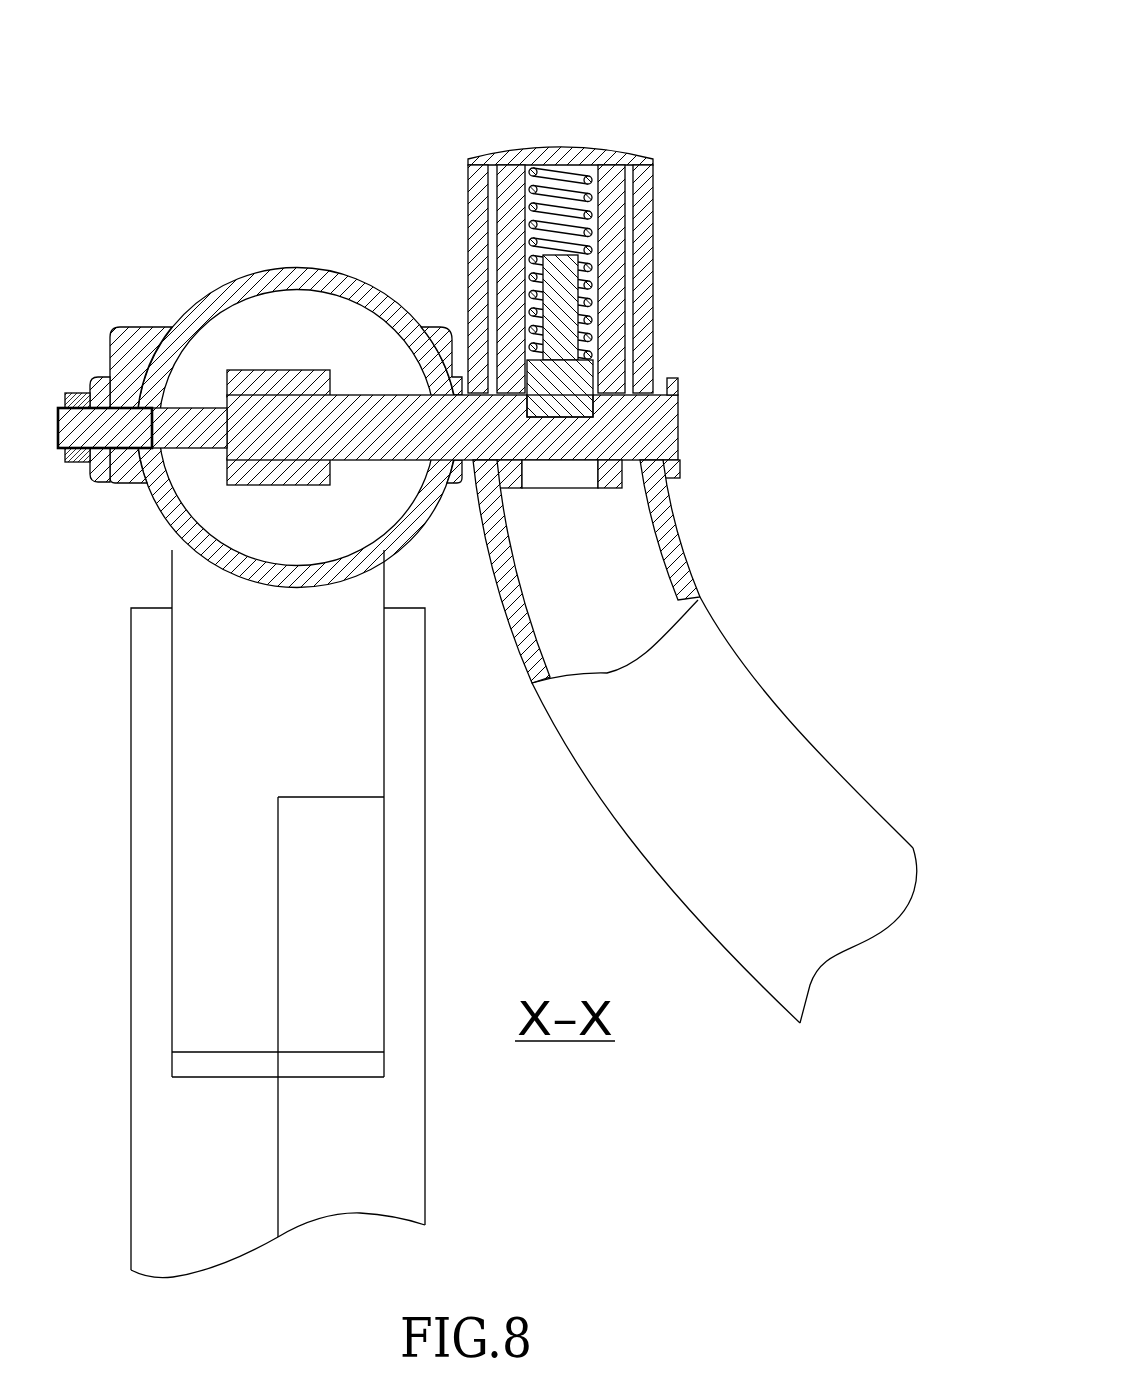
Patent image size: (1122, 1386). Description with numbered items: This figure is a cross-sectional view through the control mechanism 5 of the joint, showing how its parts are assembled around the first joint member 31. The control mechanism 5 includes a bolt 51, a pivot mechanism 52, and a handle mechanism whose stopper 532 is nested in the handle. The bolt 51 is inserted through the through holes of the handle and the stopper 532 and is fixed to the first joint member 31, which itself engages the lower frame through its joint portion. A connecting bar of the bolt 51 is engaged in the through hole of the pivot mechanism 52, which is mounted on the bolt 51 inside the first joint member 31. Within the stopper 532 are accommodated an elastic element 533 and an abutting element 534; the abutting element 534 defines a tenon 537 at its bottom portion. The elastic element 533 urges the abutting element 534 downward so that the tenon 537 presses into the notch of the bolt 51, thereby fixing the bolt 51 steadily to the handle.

The control mechanism 5 is at (388, 128).
The first joint member 31 is at (215, 280).
The bolt 51 is at (360, 413).
The pivot mechanism 52 is at (295, 378).
The stopper 532 is at (552, 147).
The elastic element 533 is at (592, 215).
The abutting element 534 is at (573, 308).
The tenon 537 is at (577, 410).